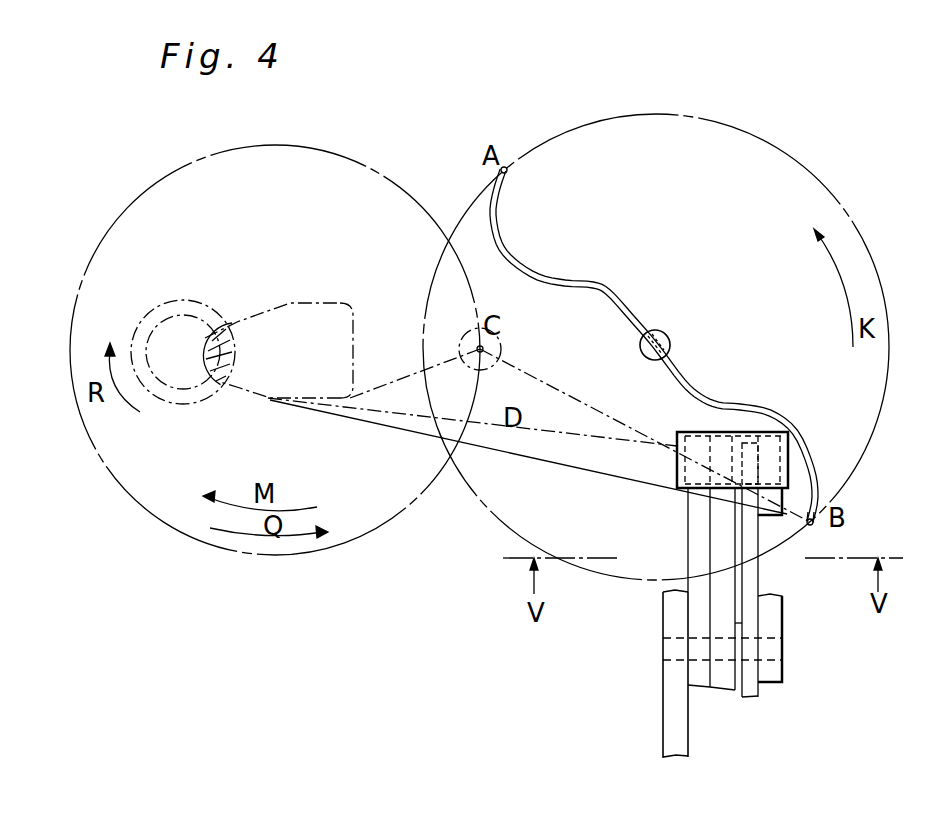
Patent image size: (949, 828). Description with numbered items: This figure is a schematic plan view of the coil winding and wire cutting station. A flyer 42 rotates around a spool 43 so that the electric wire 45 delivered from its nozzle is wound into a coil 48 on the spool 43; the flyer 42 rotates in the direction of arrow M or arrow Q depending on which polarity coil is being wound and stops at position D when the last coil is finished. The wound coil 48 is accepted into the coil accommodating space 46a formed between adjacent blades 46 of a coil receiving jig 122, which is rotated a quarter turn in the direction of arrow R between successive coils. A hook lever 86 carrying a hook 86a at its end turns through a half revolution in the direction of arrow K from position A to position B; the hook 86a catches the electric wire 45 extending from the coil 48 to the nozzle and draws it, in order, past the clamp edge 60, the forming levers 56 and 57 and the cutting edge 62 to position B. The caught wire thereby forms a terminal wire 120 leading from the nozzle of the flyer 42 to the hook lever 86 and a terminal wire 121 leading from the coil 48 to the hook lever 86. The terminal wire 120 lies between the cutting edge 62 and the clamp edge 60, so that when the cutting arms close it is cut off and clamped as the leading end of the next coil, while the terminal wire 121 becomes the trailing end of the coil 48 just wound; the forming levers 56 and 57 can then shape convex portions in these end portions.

The flyer 42 is at (502, 340).
The spool 43 is at (288, 323).
The electric wire 45 is at (396, 378).
The blades 46 is at (226, 392).
The coil accommodating space 46a is at (238, 388).
The coil 48 is at (337, 302).
The forming lever 56 is at (758, 593).
The forming lever 57 is at (698, 676).
The clamp edge 60 is at (748, 446).
The cutting edge 62 is at (774, 516).
The hook lever 86 is at (757, 405).
The hook 86a is at (818, 522).
The terminal wire 120 is at (588, 404).
The terminal wire 121 is at (544, 466).
The coil receiving jig 122 is at (157, 401).